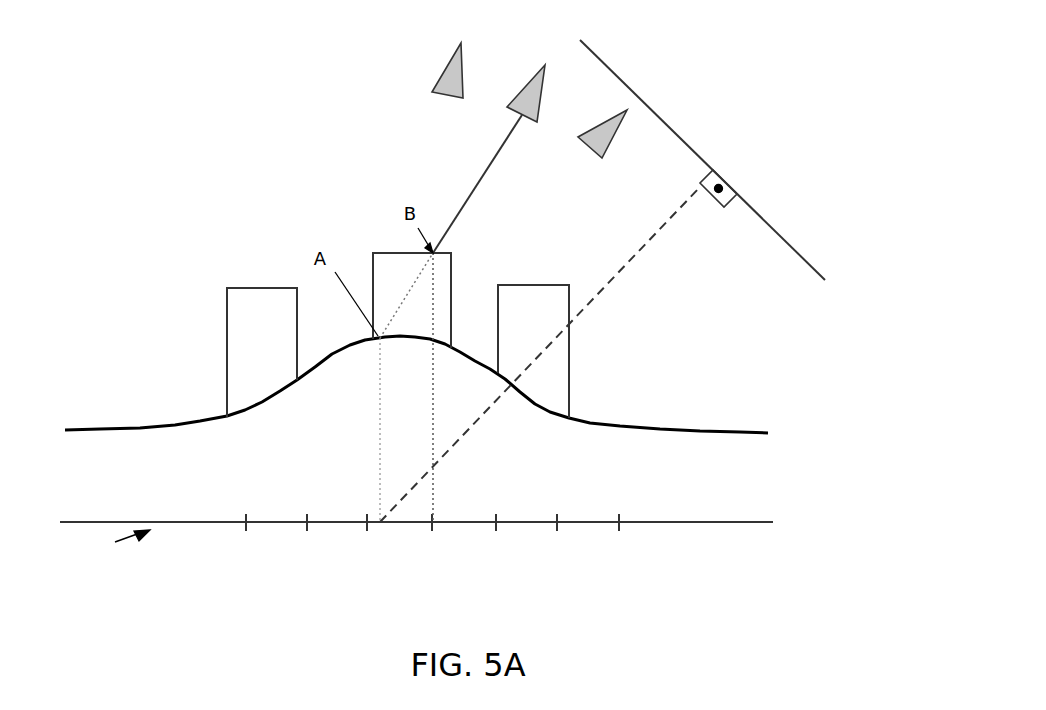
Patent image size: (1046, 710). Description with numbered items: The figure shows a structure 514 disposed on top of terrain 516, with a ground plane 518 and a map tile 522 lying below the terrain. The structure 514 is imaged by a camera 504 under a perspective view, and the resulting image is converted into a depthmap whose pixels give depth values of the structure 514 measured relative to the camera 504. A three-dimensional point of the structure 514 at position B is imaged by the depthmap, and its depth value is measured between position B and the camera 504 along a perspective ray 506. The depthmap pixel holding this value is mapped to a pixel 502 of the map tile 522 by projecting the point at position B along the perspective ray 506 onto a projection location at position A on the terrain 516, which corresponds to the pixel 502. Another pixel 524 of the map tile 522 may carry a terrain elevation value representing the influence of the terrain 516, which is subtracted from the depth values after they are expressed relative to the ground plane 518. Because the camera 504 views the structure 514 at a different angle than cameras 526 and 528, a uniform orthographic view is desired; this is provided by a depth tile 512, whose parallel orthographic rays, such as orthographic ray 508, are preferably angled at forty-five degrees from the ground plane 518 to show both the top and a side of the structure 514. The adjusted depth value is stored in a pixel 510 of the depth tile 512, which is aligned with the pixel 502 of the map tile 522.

The pixel of map tile 502 is at (381, 524).
The camera 504 is at (535, 78).
The perspective ray 506 is at (478, 175).
The orthographic ray 508 is at (617, 270).
The pixel of depth tile 510 is at (714, 170).
The depth tile 512 is at (792, 245).
The structure 514 is at (447, 320).
The terrain 516 is at (769, 432).
The ground plane 518 is at (774, 521).
The map tile 522 is at (113, 544).
The pixel of map tile 524 is at (435, 525).
The camera 526 is at (610, 120).
The camera 528 is at (446, 62).